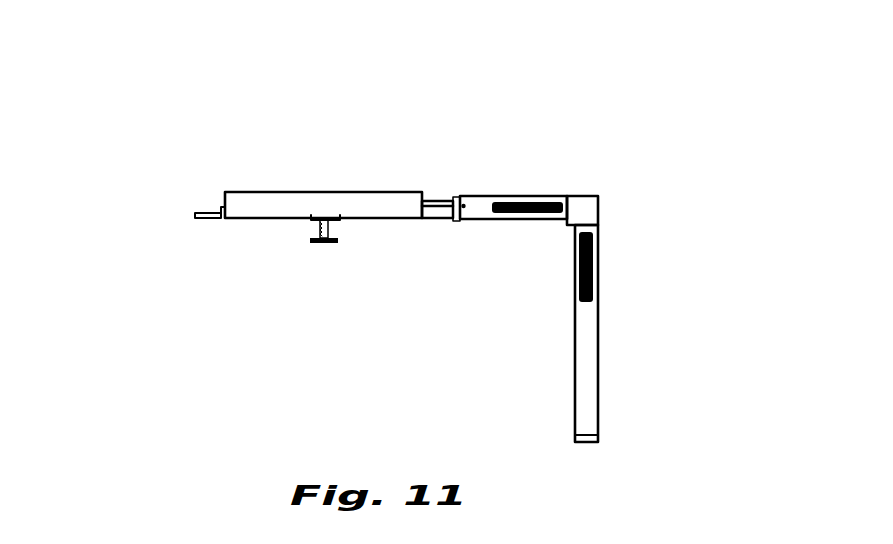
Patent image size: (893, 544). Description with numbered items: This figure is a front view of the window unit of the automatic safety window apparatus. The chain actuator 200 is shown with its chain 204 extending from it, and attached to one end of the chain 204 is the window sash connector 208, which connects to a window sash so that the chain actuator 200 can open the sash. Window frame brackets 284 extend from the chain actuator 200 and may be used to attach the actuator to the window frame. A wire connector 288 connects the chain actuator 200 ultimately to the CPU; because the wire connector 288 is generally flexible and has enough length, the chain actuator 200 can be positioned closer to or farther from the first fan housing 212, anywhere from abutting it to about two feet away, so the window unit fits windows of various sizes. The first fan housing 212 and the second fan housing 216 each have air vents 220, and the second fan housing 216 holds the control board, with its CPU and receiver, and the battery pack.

The chain actuator 200 is at (313, 195).
The window frame brackets 284 is at (190, 225).
The wire connector 288 is at (437, 198).
The first fan housing 212 is at (480, 208).
The air vents 220 is at (530, 218).
The second fan housing 216 is at (587, 363).
The chain 204 is at (318, 230).
The window sash connector 208 is at (318, 246).